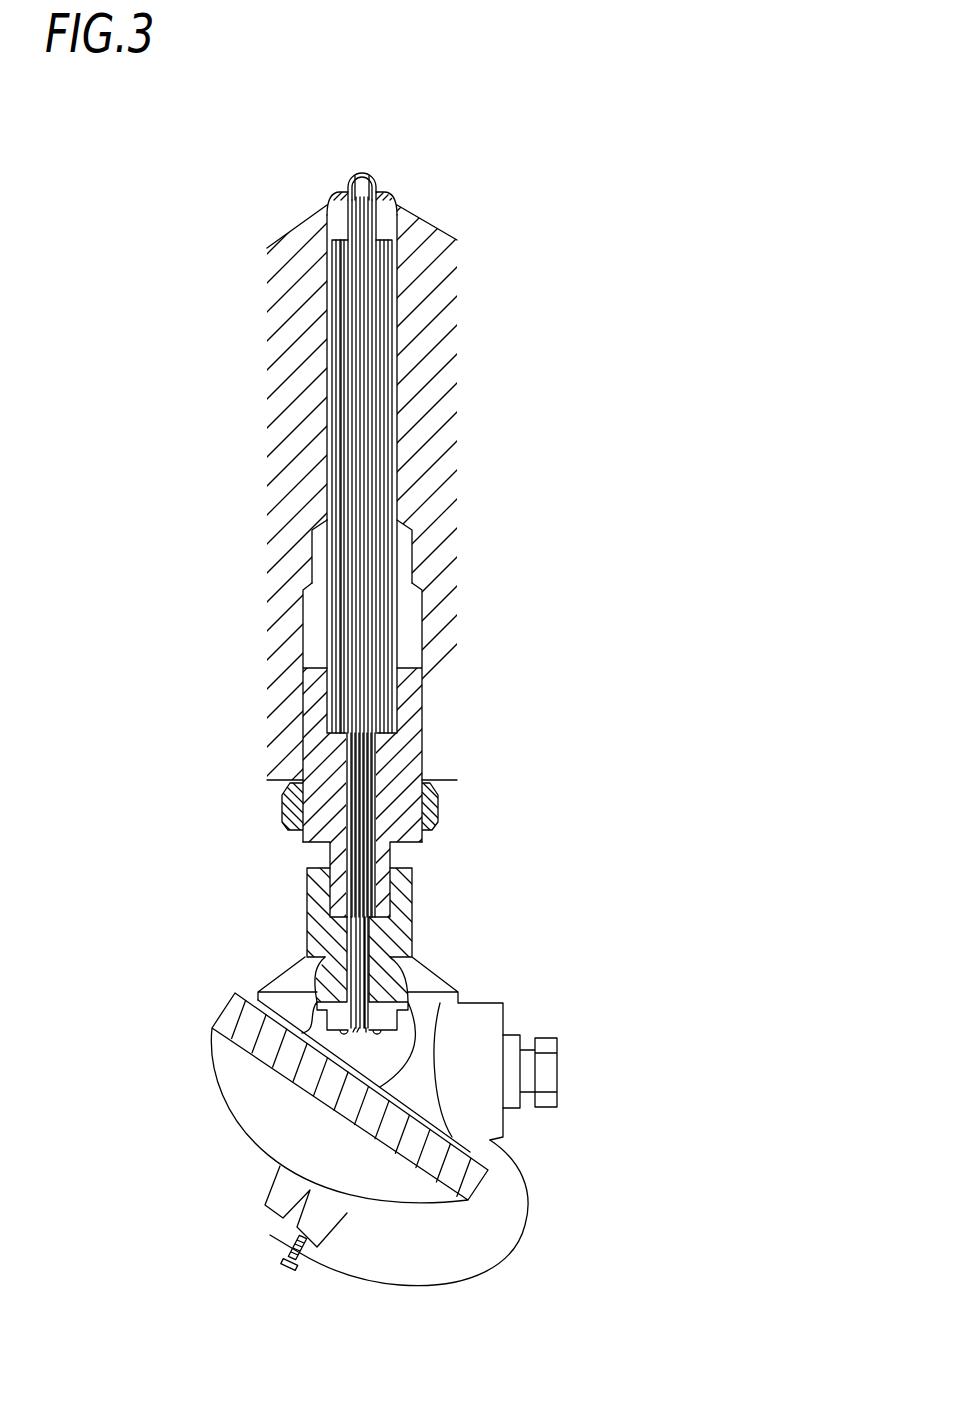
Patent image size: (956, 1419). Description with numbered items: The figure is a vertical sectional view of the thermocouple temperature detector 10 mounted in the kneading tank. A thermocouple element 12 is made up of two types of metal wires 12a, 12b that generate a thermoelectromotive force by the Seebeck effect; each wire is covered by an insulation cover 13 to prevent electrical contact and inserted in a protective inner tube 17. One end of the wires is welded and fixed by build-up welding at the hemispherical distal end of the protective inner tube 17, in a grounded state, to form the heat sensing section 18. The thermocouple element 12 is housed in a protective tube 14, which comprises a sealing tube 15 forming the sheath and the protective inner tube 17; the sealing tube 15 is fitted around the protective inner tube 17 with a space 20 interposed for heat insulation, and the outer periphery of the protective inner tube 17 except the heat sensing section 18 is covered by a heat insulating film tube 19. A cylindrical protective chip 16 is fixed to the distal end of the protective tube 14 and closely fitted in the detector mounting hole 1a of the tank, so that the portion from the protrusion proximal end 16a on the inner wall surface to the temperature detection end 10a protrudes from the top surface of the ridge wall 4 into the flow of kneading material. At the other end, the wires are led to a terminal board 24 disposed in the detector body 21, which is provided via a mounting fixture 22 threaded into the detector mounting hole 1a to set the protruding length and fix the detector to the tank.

The ridge wall 4 is at (296, 222).
The detector mounting hole 1a is at (330, 380).
The thermocouple temperature detector 10 is at (461, 972).
The temperature detection end 10a is at (397, 175).
The thermocouple element 12 is at (378, 368).
The metal wire 12a is at (352, 178).
The metal wire 12b is at (374, 176).
The insulation cover 13 is at (360, 333).
The protective tube 14 is at (407, 567).
The sealing tube 15 is at (333, 550).
The protective chip 16 is at (399, 199).
The protrusion proximal end 16a is at (350, 197).
The protective inner tube 17 is at (347, 618).
The heat sensing section 18 is at (361, 172).
The heat insulating film tube 19 is at (343, 433).
The space 20 is at (350, 492).
The detector body 21 is at (418, 978).
The mounting fixture 22 is at (322, 760).
The terminal board 24 is at (335, 985).